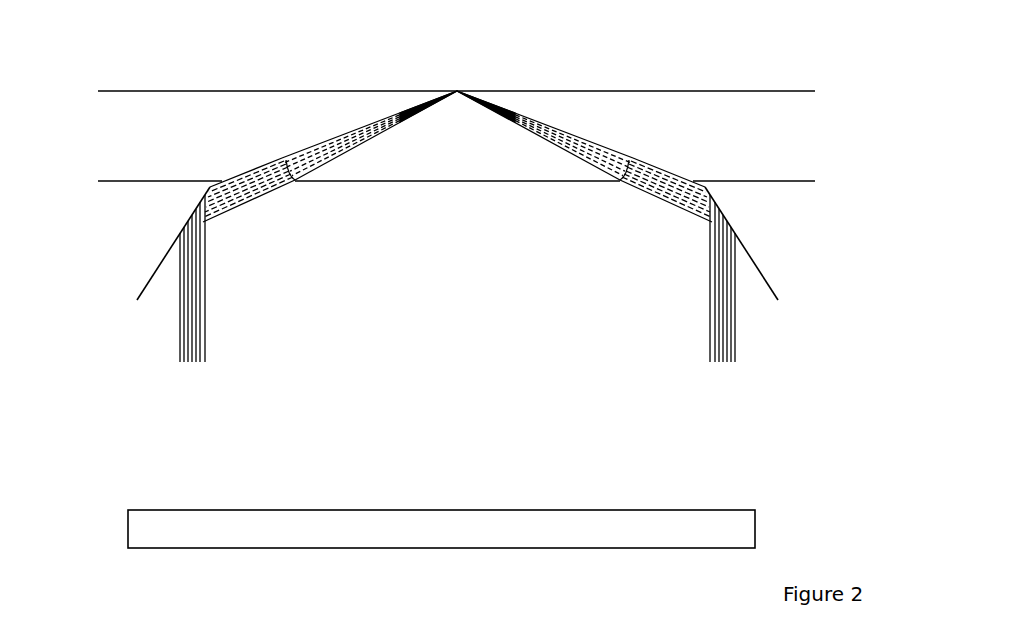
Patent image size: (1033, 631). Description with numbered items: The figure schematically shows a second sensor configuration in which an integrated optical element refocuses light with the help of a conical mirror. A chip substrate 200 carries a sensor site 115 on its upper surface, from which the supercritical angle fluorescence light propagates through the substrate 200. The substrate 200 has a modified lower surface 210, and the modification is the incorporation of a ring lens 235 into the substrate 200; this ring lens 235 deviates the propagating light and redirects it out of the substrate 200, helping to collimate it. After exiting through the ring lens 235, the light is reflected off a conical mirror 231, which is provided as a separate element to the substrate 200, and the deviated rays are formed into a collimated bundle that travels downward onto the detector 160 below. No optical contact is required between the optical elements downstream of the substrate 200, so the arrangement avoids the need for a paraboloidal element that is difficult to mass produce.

The sensor site 115 is at (441, 91).
The substrate 200 is at (155, 138).
The ring lens 235 is at (616, 138).
The conical mirror 231 is at (180, 225).
The lower surface 210 is at (742, 193).
The detector 160 is at (755, 528).